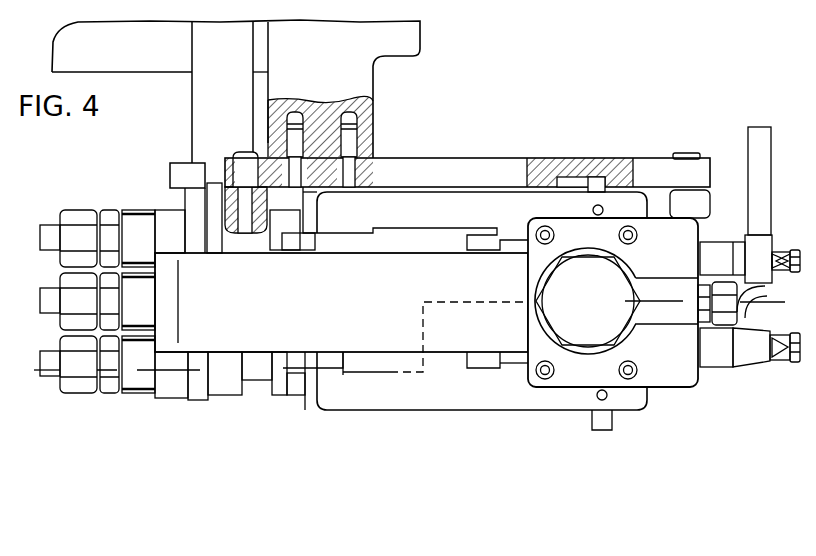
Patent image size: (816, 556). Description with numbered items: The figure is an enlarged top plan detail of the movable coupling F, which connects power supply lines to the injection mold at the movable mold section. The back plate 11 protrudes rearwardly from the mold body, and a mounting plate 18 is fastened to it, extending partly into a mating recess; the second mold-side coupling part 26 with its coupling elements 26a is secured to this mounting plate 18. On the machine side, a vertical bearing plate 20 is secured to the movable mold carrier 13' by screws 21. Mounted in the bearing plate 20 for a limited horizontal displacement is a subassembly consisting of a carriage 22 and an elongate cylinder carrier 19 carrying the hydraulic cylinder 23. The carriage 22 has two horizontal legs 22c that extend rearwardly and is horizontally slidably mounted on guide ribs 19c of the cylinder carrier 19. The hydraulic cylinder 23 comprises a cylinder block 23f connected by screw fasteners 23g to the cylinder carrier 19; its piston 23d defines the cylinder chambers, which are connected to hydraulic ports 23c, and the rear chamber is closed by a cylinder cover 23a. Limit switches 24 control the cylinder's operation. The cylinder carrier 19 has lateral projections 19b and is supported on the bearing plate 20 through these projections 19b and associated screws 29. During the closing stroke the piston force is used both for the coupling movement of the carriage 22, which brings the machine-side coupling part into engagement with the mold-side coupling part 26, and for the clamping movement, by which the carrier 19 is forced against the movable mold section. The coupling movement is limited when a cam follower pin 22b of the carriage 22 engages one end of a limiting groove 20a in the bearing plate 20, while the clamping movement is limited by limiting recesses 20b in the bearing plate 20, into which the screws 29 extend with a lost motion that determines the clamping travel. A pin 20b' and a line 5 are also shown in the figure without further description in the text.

The movable coupling F is at (106, 200).
The hydraulic line / centerline 5 is at (411, 332).
The back plate 11 is at (238, 66).
The movable mold carrier 13' is at (266, 91).
The mounting plate 18 is at (193, 178).
The cylinder carrier 19 is at (390, 311).
The lateral projections 19b is at (213, 200).
The guide ribs 19c is at (292, 392).
The bearing plate 20 is at (536, 157).
The limiting groove 20a is at (572, 160).
The limiting recesses 20b is at (290, 106).
The pin 20b' is at (611, 343).
The screws 21 is at (348, 150).
The carriage 22 is at (558, 414).
The cam follower pins 22b is at (608, 178).
The horizontal legs 22c is at (448, 222).
The hydraulic cylinder 23 is at (680, 390).
The cylinder cover 23a is at (605, 313).
The hydraulic ports 23c is at (762, 138).
The piston 23d is at (748, 276).
The cylinder block 23f is at (700, 378).
The screw fasteners 23g is at (632, 378).
The limit switches 24 is at (757, 360).
The second mold-side coupling part 26 is at (115, 303).
The coupling elements 26a is at (258, 370).
The screws 29 is at (241, 153).